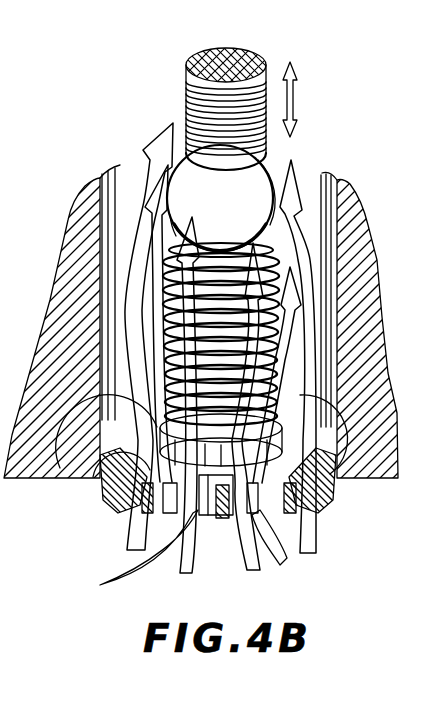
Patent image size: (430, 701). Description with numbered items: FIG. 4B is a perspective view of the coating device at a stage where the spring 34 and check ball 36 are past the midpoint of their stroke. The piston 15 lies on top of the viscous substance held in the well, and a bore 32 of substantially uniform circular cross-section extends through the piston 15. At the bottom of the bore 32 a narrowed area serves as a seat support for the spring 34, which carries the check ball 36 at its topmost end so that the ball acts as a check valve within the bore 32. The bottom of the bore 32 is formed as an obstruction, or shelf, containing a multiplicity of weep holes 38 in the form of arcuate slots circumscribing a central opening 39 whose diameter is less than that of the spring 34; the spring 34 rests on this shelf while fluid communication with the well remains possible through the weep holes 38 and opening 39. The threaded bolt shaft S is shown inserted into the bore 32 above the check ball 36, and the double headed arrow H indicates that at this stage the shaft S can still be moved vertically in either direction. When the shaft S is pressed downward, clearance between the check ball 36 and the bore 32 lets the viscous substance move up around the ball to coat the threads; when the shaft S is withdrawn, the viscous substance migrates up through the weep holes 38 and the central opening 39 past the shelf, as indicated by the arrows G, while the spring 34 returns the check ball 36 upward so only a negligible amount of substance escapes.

The threaded bolt shaft S is at (240, 50).
The double headed arrow H is at (294, 96).
The check ball 36 is at (265, 176).
The spring 34 is at (320, 172).
The bore 32 is at (108, 205).
The piston 15 is at (85, 215).
The weep holes 38 is at (82, 482).
The central opening 39 is at (230, 523).
The arrows G is at (150, 570).